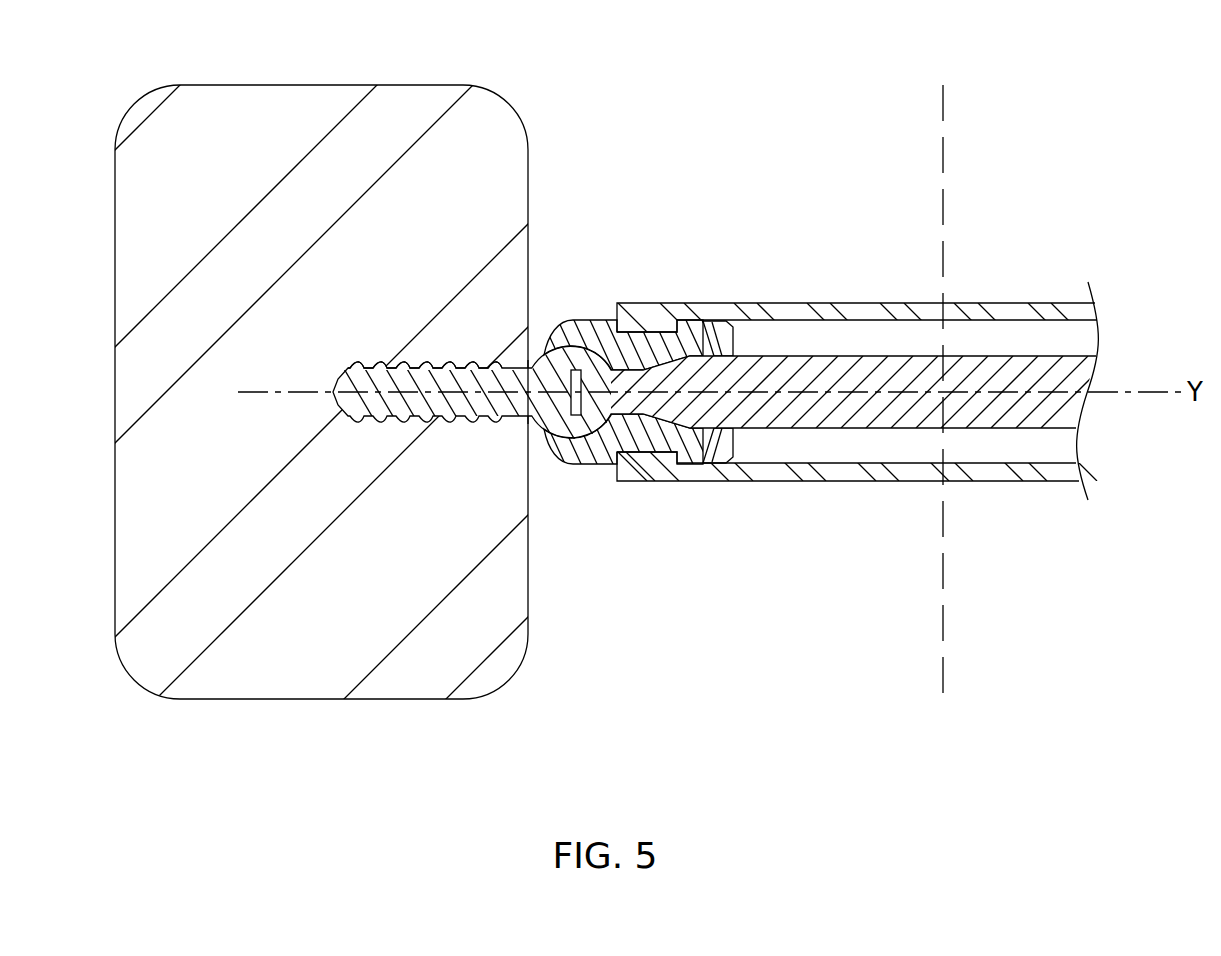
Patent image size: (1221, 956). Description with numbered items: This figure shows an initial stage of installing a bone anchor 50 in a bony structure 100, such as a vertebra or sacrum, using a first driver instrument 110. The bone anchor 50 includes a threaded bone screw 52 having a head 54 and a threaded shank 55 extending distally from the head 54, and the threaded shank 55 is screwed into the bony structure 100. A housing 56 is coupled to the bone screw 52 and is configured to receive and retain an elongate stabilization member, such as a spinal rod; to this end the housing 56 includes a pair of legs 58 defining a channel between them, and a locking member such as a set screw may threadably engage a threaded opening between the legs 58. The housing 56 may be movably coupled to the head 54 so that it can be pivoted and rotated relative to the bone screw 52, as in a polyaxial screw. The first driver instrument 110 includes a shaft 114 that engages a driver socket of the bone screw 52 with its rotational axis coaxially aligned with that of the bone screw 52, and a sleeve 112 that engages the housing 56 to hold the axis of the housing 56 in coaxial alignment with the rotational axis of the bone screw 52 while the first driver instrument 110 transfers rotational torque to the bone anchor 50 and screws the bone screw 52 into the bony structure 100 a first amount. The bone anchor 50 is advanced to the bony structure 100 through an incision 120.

The bony structure 100 is at (272, 85).
The bone anchor 50 is at (668, 364).
The threaded bone screw 52 is at (505, 389).
The threaded shank 55 is at (437, 368).
The head 54 is at (592, 448).
The housing 56 is at (594, 330).
The legs 58 is at (717, 335).
The first driver instrument 110 is at (827, 422).
The sleeve 112 is at (1007, 303).
The shaft 114 is at (828, 356).
The incision 120 is at (944, 107).